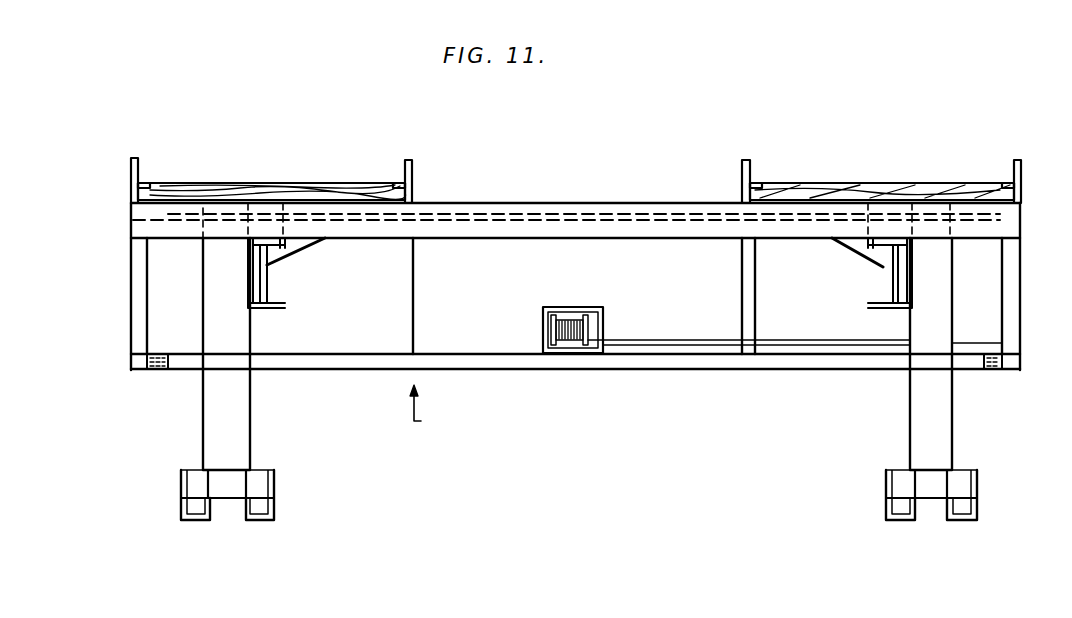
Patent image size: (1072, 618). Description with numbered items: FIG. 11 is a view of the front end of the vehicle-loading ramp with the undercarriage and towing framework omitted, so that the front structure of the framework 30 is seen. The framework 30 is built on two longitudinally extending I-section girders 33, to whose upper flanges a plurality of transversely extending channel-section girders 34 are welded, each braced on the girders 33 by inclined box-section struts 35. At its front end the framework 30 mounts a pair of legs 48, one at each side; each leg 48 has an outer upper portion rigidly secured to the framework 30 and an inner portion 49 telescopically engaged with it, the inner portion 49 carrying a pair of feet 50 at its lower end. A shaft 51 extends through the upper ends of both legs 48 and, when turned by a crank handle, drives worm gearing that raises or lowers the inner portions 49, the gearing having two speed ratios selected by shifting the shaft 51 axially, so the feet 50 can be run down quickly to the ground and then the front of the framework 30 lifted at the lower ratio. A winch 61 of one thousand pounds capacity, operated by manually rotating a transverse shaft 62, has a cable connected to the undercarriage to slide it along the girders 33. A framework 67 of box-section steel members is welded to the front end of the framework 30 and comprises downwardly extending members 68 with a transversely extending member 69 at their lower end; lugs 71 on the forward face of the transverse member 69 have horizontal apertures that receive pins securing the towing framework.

The framework 30 is at (651, 176).
The I-section girder 33 is at (263, 286).
The channel-section girder 34 is at (640, 233).
The box-section strut 35 is at (305, 247).
The leg 48 is at (238, 414).
The inner portion 49 is at (230, 492).
The feet 50 is at (885, 505).
The shaft 51 is at (545, 214).
The winch 61 is at (575, 341).
The transverse shaft 62 is at (811, 338).
The framework of box-section members 67 is at (429, 411).
The downwardly extending member 68 is at (132, 298).
The transverse member 69 is at (476, 362).
The lug 71 is at (160, 371).